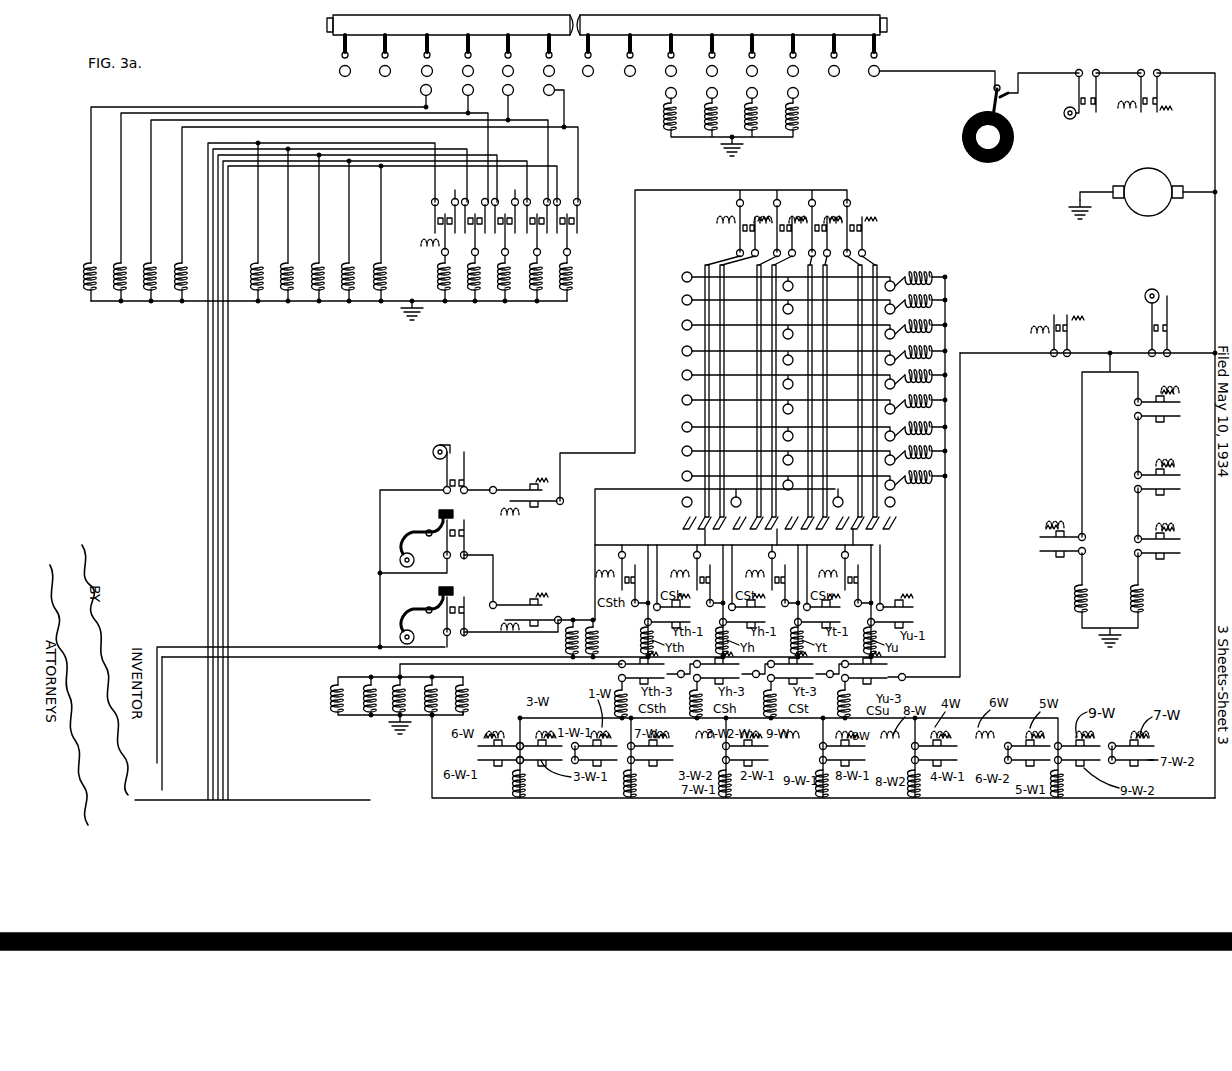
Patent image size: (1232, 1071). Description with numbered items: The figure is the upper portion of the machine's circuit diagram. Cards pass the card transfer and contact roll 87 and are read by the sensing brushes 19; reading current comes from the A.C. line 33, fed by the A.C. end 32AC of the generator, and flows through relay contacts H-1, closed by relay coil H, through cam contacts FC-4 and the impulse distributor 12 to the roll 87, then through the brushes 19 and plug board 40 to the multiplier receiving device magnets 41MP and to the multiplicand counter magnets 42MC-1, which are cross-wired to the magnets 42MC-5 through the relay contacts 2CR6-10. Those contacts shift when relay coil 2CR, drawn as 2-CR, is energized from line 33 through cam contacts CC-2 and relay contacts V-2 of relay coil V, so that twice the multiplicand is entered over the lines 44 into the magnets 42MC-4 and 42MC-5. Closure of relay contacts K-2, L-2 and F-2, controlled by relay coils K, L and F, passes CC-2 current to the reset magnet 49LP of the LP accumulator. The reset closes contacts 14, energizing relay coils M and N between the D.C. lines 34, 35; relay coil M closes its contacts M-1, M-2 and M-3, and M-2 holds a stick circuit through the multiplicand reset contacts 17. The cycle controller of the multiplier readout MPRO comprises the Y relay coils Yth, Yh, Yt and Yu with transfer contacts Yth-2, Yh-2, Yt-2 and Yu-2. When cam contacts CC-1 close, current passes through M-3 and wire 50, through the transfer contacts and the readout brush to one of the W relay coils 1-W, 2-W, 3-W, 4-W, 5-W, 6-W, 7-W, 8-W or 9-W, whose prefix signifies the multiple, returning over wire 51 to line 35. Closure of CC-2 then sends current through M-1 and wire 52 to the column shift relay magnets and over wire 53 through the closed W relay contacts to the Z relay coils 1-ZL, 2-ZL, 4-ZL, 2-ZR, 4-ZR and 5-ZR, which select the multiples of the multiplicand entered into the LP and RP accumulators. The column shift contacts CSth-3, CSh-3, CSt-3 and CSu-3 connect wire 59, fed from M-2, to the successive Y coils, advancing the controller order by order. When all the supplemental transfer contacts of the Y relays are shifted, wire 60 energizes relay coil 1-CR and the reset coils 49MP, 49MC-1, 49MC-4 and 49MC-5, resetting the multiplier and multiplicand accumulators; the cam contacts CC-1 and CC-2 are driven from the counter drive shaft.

The card transfer and contact roll 87 is at (332, 22).
The sensing brushes 19 is at (713, 47).
The plug board 40 is at (420, 86).
The counter magnets of the MP accumulator 41MP is at (798, 126).
The impulse distributor 12 is at (964, 150).
The cam contacts FC-4 is at (1079, 101).
The relay coil H is at (1126, 118).
The relay contacts H-1 is at (1158, 112).
The A.C. end of the A.C.-D.C. generator 32AC is at (1130, 178).
The A.C. line 33 is at (1208, 167).
The relay coil 2CR is at (428, 238).
The multi-contact relay points 2CR-6 to 10 2CR6-10 is at (570, 202).
The counter magnets of the MC-1 accumulator 42MC-1 is at (125, 285).
The accumulator magnets of the MC-4 accumulator 42MC-4 is at (374, 282).
The accumulator magnets of the MC-5 accumulator 42MC-5 is at (563, 282).
The group of lines 44 is at (229, 515).
The wire 50 is at (628, 366).
The W relay coil 9-W is at (934, 269).
The W relay coil 8-W is at (940, 293).
The relay coil 7-W is at (937, 325).
The W relay coil 6-W is at (938, 349).
The W relay coil 5-W is at (942, 372).
The relay coil 4-W is at (948, 398).
The relay coil 3-W is at (950, 426).
The W relay coil 2-W is at (948, 451).
The W relay coil 1-W is at (948, 472).
The transfer relay contacts Yth-2 is at (743, 236).
The Y relay coil Yth is at (722, 219).
The transfer relay contacts Yh-2 is at (778, 201).
The Y relay coil Yh is at (755, 190).
The transfer relay contacts Yt-2 is at (814, 203).
The Y relay coil Yt is at (807, 183).
The transfer relay contacts Yu-2 is at (852, 240).
The Y relay coil Yu is at (846, 198).
The MPRO readout MPRO is at (897, 247).
The wire 59 is at (632, 543).
The column shift relay contacts CSth-3 is at (618, 553).
The column shift relay contacts CSh-3 is at (700, 559).
The column shift relay contacts CSt-3 is at (775, 559).
The column shift relay contacts CSu-3 is at (848, 559).
The wire 51 is at (946, 598).
The wire 52 is at (960, 580).
The relay coil N is at (567, 618).
The relay coil M is at (598, 635).
The cam contacts CC-1 is at (452, 450).
The relay contacts M-3 is at (521, 488).
The multiplicand reset contacts 17 is at (462, 540).
The LP accumulator reset contacts 14 is at (453, 608).
The relay contacts M-2 is at (521, 603).
The D.C. line 34 is at (250, 647).
The D.C. line 35 is at (265, 657).
The wire 60 is at (568, 660).
The reset coil of the MC-1 accumulator 49MC-1 is at (336, 700).
The reset coil of the MC-4 accumulator 49MC-4 is at (371, 706).
The reset coil of the MC-5 accumulator 49MC-5 is at (398, 708).
The MP reset coil 49MP is at (430, 716).
The relay coil 1-CR is at (469, 700).
The wire 53 is at (585, 719).
The relay coil 1-ZL is at (525, 786).
The relay coil 2-ZL is at (634, 787).
The relay coil 2-ZR is at (736, 785).
The relay coil 4-ZL is at (832, 795).
The relay coil 4-ZR is at (920, 792).
The relay coil 5-ZR is at (1060, 787).
The relay contacts M-1 is at (1066, 318).
The cam contacts CC-2 is at (1159, 322).
The relay coil K is at (1174, 388).
The relay contacts K-2 is at (1162, 418).
The relay coil L is at (1166, 463).
The relay contacts L-2 is at (1173, 488).
The relay coil F is at (1158, 525).
The relay contacts F-2 is at (1178, 544).
The relay coil V is at (1032, 520).
The relay contacts V-2 is at (1038, 543).
The relay coil 2CR 2-CR is at (1075, 602).
The LP reset magnet 49LP is at (1139, 616).